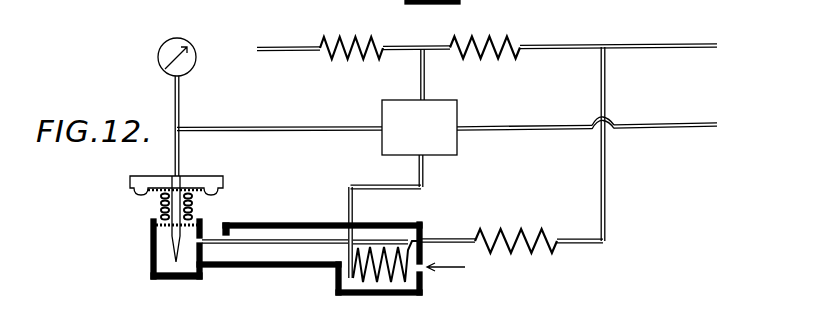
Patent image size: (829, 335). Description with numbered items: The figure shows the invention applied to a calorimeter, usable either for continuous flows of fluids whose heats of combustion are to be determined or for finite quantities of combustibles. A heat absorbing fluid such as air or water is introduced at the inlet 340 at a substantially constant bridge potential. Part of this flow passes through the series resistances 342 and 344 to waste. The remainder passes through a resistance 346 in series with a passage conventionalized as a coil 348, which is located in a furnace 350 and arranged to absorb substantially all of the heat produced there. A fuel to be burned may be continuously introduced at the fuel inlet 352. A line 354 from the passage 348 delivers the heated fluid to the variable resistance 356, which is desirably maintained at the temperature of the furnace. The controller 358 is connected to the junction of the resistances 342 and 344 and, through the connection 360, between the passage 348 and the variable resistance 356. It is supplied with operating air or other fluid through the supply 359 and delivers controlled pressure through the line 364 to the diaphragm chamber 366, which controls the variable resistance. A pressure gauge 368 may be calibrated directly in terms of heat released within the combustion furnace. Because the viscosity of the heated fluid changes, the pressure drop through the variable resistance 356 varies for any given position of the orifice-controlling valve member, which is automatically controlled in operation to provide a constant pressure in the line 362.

The fluid inlet 340 is at (657, 42).
The series resistance 342 is at (490, 42).
The series resistance 344 is at (358, 44).
The resistance 346 is at (523, 232).
The coil passage 348 is at (390, 278).
The furnace 350 is at (408, 232).
The fuel inlet 352 is at (423, 272).
The line 354 is at (270, 240).
The variable resistance 356 is at (175, 222).
The controller 358 is at (457, 149).
The operating air supply 359 is at (665, 113).
The lead 360 is at (426, 88).
The line 362 is at (425, 180).
The line 364 is at (296, 126).
The diaphragm chamber 366 is at (208, 176).
The pressure gauge 368 is at (173, 40).